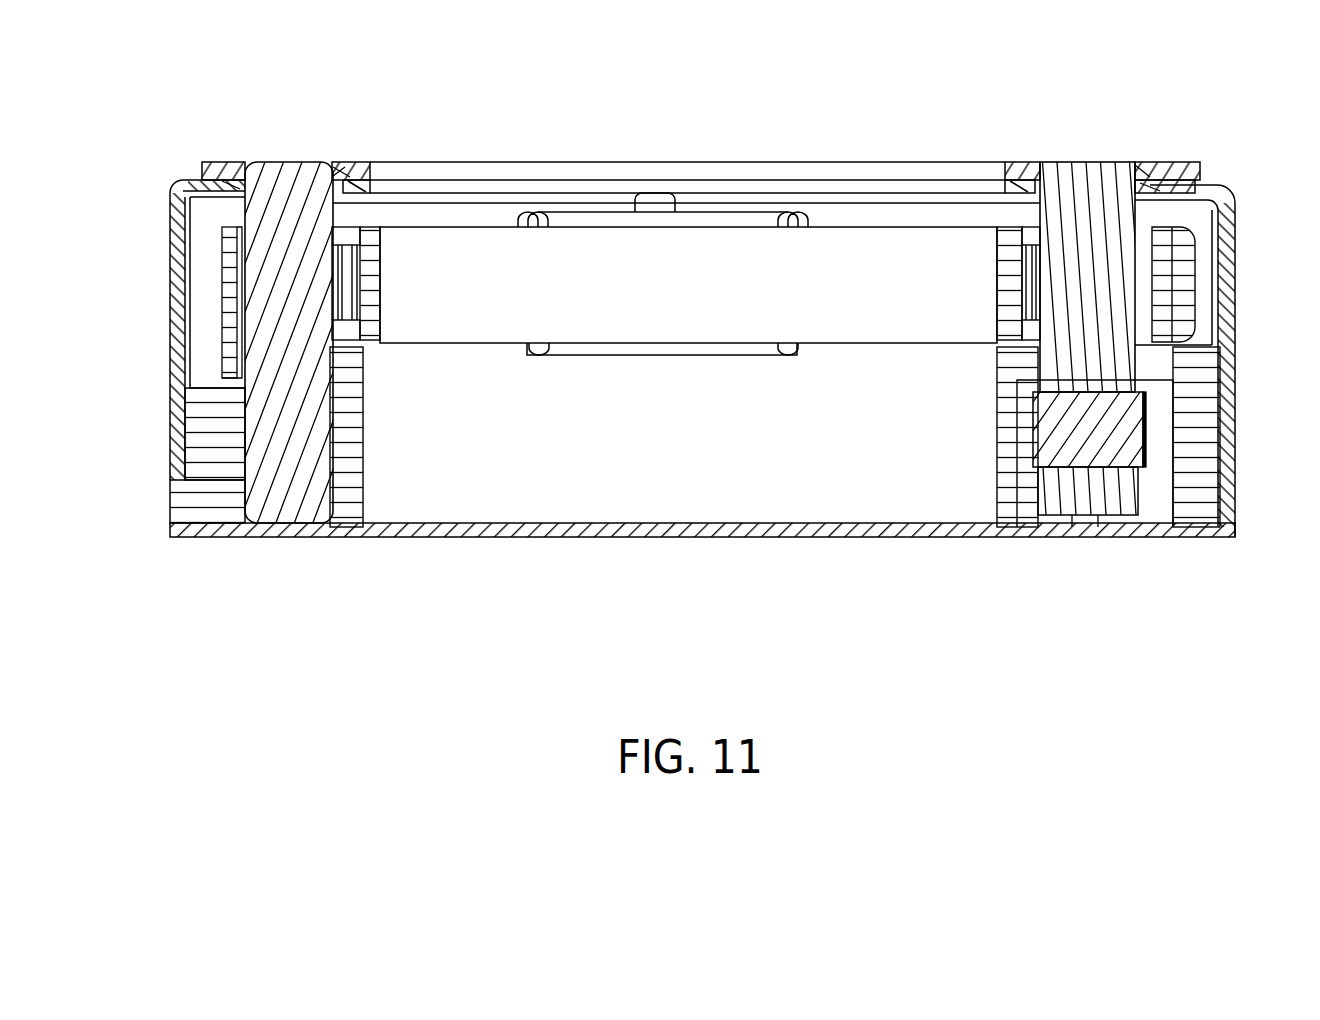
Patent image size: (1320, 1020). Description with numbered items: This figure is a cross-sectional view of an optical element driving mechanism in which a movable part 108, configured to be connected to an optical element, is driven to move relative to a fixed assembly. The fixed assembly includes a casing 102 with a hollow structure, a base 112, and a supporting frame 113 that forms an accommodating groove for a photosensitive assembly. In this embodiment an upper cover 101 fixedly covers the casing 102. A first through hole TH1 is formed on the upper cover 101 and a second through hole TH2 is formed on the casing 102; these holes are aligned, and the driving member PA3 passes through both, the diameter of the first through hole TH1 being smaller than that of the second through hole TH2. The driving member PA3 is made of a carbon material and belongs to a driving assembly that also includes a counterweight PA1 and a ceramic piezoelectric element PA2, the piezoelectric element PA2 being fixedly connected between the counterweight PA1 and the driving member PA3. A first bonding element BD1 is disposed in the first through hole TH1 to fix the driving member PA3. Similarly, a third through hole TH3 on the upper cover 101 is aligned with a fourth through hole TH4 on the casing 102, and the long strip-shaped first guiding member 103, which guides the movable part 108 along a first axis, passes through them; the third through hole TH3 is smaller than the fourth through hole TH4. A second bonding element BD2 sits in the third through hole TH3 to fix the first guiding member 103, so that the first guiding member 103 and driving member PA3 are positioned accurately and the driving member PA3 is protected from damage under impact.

The upper cover 101 is at (234, 158).
The casing 102 is at (215, 408).
The first guiding member 103 is at (262, 297).
The movable part 108 is at (707, 245).
The base 112 is at (178, 500).
The supporting frame 113 is at (175, 531).
The first bonding element BD1 is at (1093, 160).
The second bonding element BD2 is at (332, 167).
The first through hole TH1 is at (1140, 164).
The second through hole TH2 is at (1150, 185).
The third through hole TH3 is at (344, 172).
The fourth through hole TH4 is at (226, 189).
The counterweight PA1 is at (1125, 495).
The piezoelectric element PA2 is at (1128, 432).
The driving member PA3 is at (1115, 290).